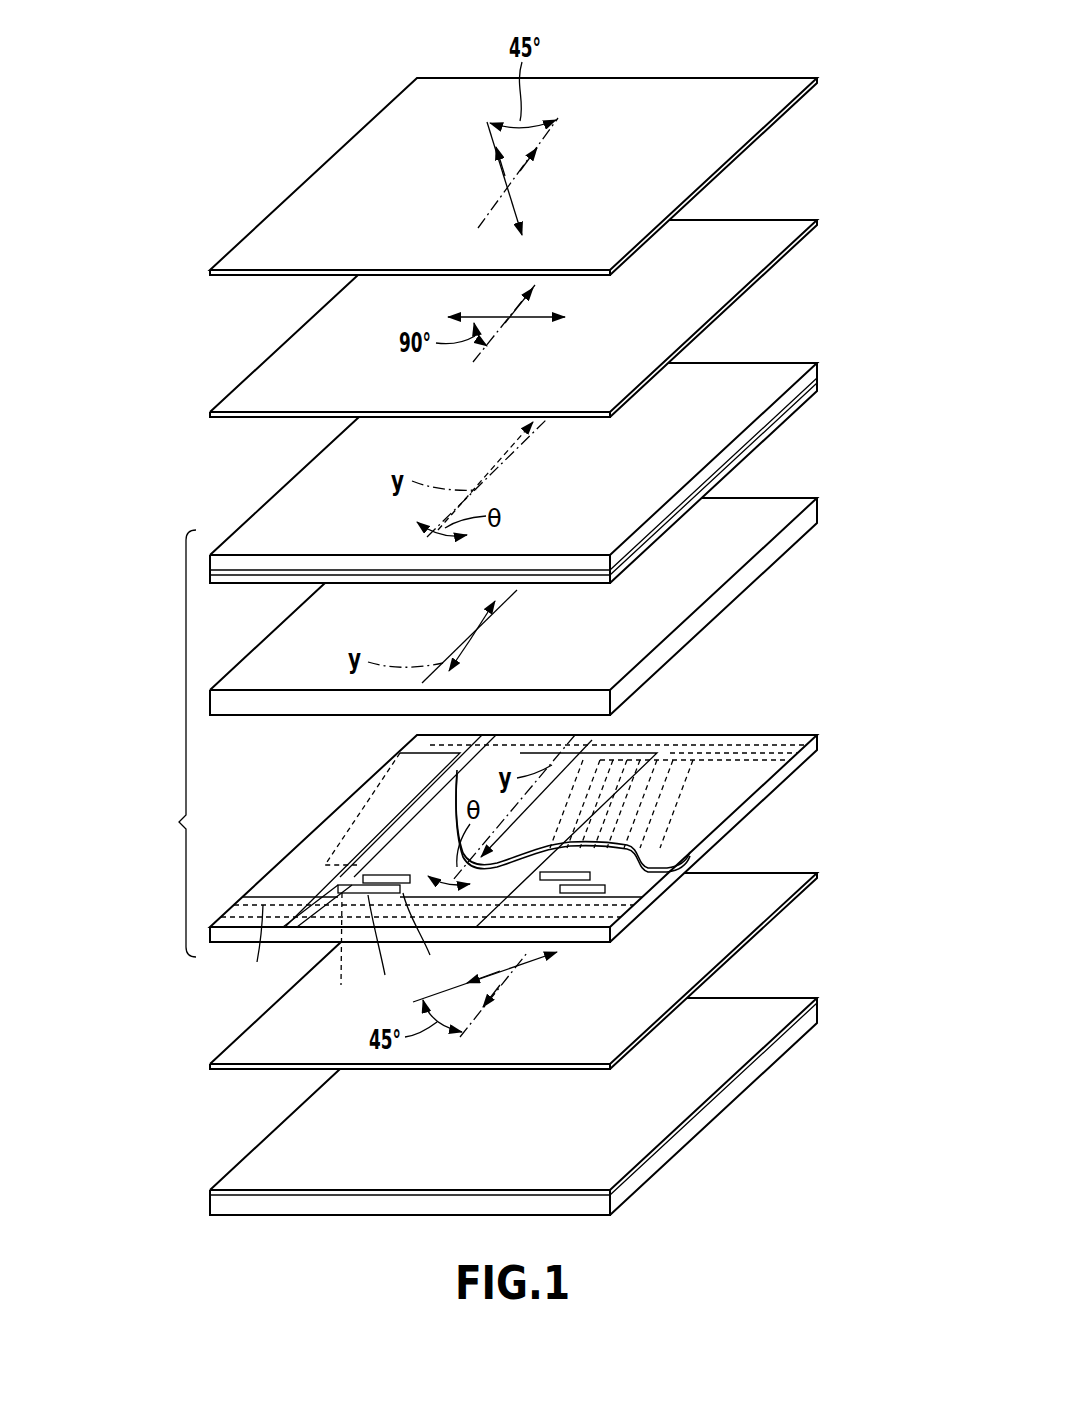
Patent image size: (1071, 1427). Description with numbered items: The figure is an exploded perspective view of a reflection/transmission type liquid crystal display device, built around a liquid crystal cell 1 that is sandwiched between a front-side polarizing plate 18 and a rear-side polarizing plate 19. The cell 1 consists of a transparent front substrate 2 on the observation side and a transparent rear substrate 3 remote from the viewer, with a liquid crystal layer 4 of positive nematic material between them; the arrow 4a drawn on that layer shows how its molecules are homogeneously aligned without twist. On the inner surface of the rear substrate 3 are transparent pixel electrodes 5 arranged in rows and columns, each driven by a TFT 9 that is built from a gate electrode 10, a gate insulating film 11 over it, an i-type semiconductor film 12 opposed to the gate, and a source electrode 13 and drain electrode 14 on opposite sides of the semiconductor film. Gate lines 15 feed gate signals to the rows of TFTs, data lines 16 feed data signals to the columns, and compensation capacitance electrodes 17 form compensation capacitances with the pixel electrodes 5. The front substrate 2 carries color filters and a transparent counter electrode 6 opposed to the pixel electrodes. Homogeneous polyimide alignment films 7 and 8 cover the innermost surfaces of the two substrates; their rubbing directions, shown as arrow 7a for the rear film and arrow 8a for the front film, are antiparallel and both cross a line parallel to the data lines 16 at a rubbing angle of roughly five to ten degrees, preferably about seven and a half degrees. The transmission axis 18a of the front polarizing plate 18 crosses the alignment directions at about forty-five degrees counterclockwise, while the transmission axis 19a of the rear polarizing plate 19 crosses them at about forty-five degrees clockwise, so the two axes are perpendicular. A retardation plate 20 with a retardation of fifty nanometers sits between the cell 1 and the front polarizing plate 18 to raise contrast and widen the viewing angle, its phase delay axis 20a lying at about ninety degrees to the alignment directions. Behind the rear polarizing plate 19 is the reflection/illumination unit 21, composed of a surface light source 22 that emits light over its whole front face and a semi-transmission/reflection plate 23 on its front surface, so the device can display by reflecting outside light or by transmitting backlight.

The liquid crystal cell 1 is at (177, 743).
The front substrate 2 is at (712, 427).
The rear substrate 3 is at (745, 808).
The liquid crystal layer 4 is at (690, 627).
The liquid crystal alignment direction 4a is at (483, 620).
The transparent pixel electrodes 5 is at (367, 800).
The electrode 6 is at (723, 462).
The alignment film 7 is at (772, 780).
The alignment direction 7a is at (522, 175).
The alignment film 8 is at (790, 405).
The alignment direction 8a is at (525, 427).
The TFT 9 is at (633, 838).
The gate electrode 10 is at (333, 953).
The gate insulating film 11 is at (253, 947).
The i-type semiconductor film 12 is at (382, 950).
The source electrode 13 is at (424, 938).
The drain electrode 14 is at (342, 884).
The gate lines 15 is at (272, 902).
The data lines 16 is at (367, 853).
The compensation capacitance electrodes 17 is at (777, 737).
The front-side polarizing plate 18 is at (746, 100).
The transmission axis 18a is at (505, 172).
The rear-side polarizing plate 19 is at (747, 920).
The transmission axis 19a is at (533, 957).
The retardation plate 20 is at (717, 285).
The phase delay axis 20a is at (537, 320).
The reflection/illumination unit 21 is at (688, 1147).
The surface light source 22 is at (757, 1073).
The semi-transmission/reflection plate 23 is at (737, 1023).